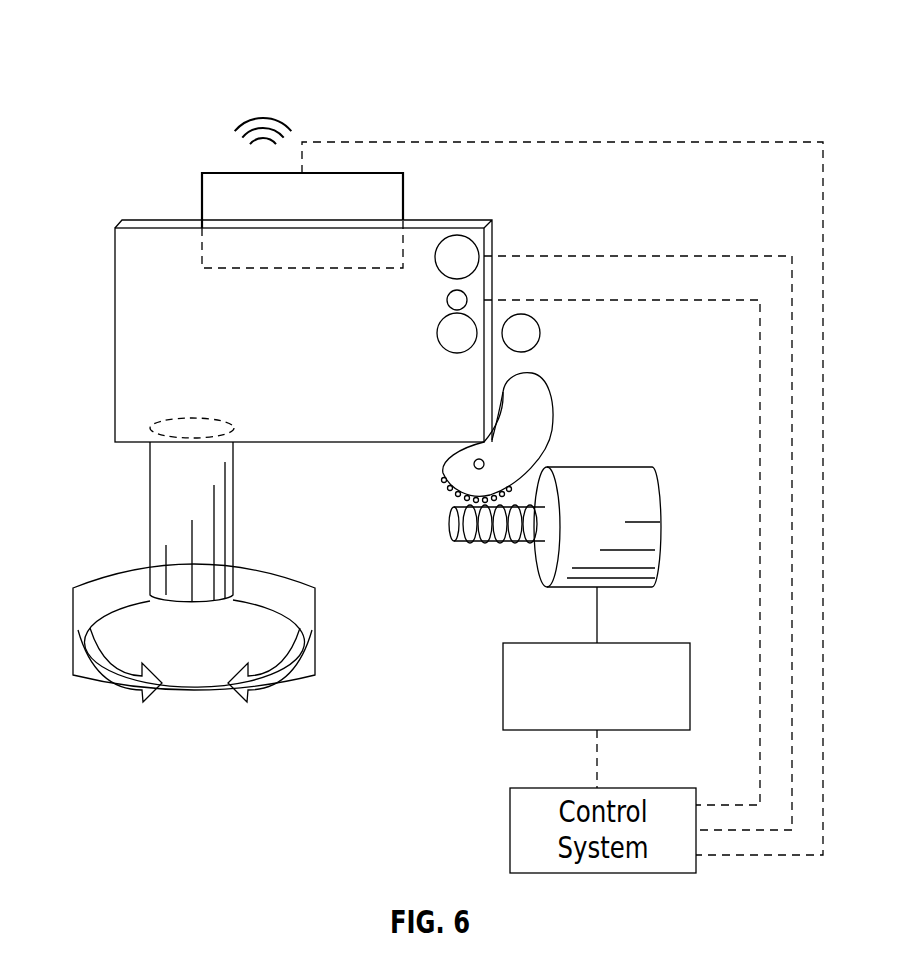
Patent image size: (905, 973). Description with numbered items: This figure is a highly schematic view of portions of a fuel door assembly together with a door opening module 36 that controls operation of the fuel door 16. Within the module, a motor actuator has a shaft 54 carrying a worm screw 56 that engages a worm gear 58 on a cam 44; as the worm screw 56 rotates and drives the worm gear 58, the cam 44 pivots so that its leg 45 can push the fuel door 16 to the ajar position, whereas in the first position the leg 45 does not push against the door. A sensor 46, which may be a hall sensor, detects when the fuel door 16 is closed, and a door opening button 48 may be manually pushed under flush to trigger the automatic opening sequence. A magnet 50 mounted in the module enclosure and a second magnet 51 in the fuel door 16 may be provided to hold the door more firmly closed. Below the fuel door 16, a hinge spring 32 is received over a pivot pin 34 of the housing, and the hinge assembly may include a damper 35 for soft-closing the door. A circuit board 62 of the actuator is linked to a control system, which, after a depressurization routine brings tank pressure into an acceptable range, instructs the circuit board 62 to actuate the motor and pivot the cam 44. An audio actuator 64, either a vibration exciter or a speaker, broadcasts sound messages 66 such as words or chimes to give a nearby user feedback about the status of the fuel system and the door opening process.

The door opening module 36 is at (114, 39).
The fuel door 16 is at (130, 333).
The audio actuator 64 is at (217, 200).
The sound messages 66 is at (263, 118).
The door opening button 48 is at (441, 279).
The sensor 46 is at (469, 289).
The second magnet 51 is at (447, 338).
The magnet 50 is at (523, 332).
The cam 44 is at (535, 438).
The leg 45 is at (505, 390).
The worm gear 58 is at (445, 478).
The worm screw 56 is at (496, 544).
The shaft 54 is at (538, 530).
The circuit board 62 is at (560, 643).
The pivot pin 34 is at (165, 508).
The hinge spring 32 is at (73, 622).
The damper 35 is at (200, 672).